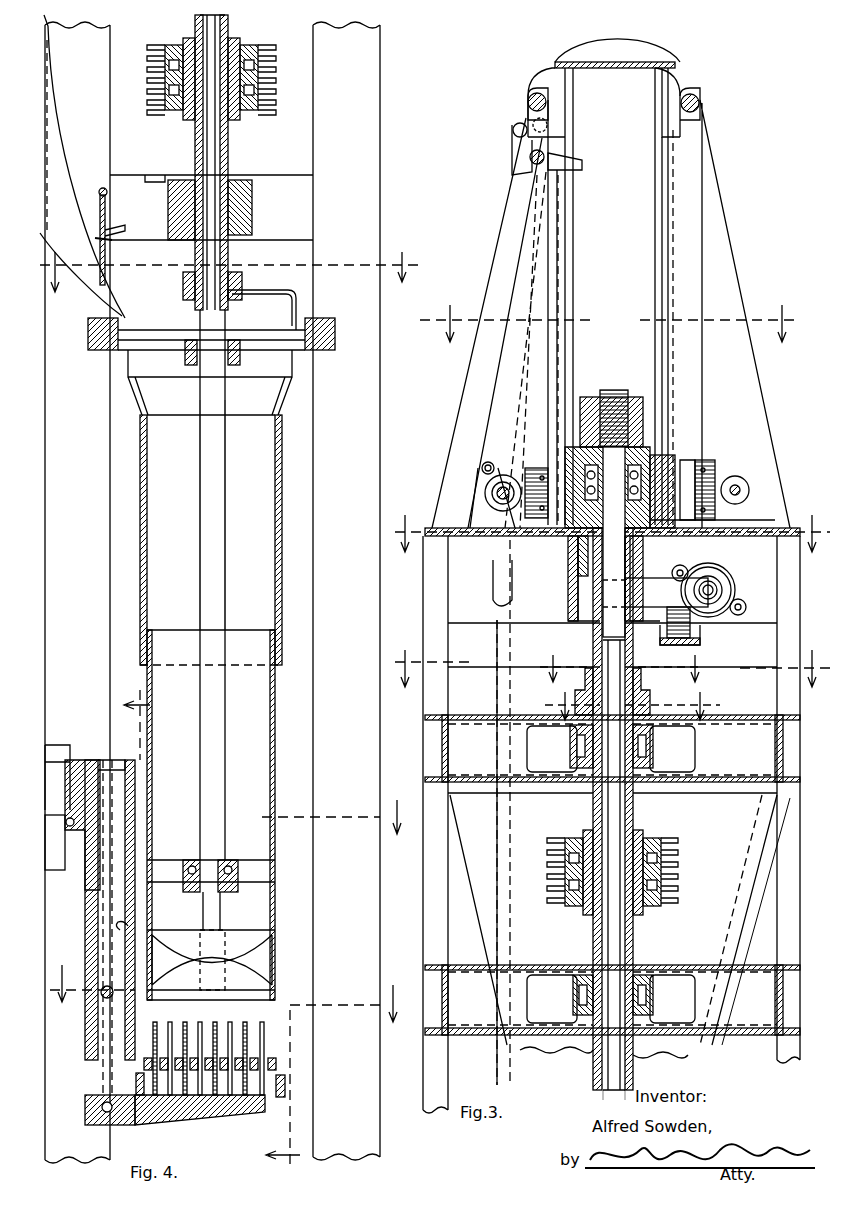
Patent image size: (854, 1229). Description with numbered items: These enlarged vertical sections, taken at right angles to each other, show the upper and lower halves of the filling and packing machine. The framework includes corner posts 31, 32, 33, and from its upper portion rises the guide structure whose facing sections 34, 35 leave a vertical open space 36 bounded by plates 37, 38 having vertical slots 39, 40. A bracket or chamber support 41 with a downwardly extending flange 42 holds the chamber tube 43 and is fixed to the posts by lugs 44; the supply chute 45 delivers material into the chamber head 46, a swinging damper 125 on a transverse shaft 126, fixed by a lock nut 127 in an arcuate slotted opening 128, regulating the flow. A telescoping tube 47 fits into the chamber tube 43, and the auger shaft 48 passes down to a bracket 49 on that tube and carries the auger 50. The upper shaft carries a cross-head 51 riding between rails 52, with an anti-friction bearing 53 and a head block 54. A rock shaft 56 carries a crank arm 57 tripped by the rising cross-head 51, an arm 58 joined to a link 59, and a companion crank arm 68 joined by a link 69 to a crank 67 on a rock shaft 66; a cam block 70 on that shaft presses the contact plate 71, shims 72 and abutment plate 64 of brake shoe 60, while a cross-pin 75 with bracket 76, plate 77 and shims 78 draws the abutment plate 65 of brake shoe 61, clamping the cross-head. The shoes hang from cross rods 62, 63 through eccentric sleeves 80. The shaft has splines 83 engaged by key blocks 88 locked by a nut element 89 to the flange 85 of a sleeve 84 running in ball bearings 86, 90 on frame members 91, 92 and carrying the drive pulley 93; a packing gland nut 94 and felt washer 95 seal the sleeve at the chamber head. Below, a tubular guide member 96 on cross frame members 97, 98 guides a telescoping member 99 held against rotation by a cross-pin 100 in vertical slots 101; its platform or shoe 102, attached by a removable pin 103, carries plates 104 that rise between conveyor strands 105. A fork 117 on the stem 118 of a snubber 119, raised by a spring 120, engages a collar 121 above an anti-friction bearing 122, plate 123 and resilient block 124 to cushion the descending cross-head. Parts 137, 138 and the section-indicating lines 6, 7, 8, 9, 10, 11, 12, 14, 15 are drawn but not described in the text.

In FIG. 4, the corner post 31 is at (355, 428).
In FIG. 4, the corner post 32 is at (212, 592).
In FIG. 3, the corner post 32 is at (801, 799).
In FIG. 3, the corner post 33 is at (428, 862).
In FIG. 3, the guide structure section 34 is at (472, 280).
In FIG. 3, the guide structure section 35 is at (730, 266).
In FIG. 3, the vertical open space 36 is at (630, 219).
In FIG. 3, the plate 37 is at (560, 265).
In FIG. 3, the plate 38 is at (672, 238).
In FIG. 3, the vertical slot 39 is at (565, 136).
In FIG. 3, the vertical slot 40 is at (672, 118).
In FIG. 4, the bracket or chamber support 41 is at (322, 355).
In FIG. 4, the downwardly extending flange 42 is at (300, 377).
In FIG. 4, the chamber tube 43 is at (280, 497).
In FIG. 4, the lugs 44 is at (335, 333).
In FIG. 4, the supply chute 45 is at (92, 153).
In FIG. 3, the supply chute 45 is at (715, 940).
In FIG. 4, the chamber head 46 is at (296, 292).
In FIG. 4, the telescoping tube 47 is at (275, 746).
In FIG. 4, the auger shaft 48 is at (213, 617).
In FIG. 3, the auger shaft 48 is at (607, 1092).
In FIG. 4, the bracket 49 is at (245, 868).
In FIG. 4, the auger 50 is at (270, 961).
In FIG. 3, the cross-head 51 is at (560, 472).
In FIG. 3, the vertical bars or rails 52 is at (660, 274).
In FIG. 3, the anti-friction bearing 53 is at (650, 478).
In FIG. 3, the head block 54 is at (650, 420).
In FIG. 3, the rock shaft 56 is at (530, 160).
In FIG. 3, the crank arm 57 is at (583, 164).
In FIG. 3, the arm 58 is at (552, 148).
In FIG. 3, the link 59 is at (498, 688).
In FIG. 3, the brake shoe 60 is at (549, 355).
In FIG. 3, the brake shoe 61 is at (680, 338).
In FIG. 3, the cross rod 62 is at (528, 103).
In FIG. 3, the cross rod 63 is at (700, 100).
In FIG. 3, the abutment plate 64 is at (500, 460).
In FIG. 3, the abutment plate 65 is at (700, 521).
In FIG. 3, the rock shaft 66 is at (497, 494).
In FIG. 3, the crank 67 is at (492, 488).
In FIG. 3, the companion crank arm 68 is at (514, 135).
In FIG. 3, the link 69 is at (490, 398).
In FIG. 3, the cam block 70 is at (485, 510).
In FIG. 3, the contact plate 71 is at (540, 564).
In FIG. 3, the shims 72 is at (527, 458).
In FIG. 3, the cross-pin 75 is at (740, 494).
In FIG. 3, the bracket 76 is at (742, 488).
In FIG. 3, the plate 77 is at (715, 470).
In FIG. 3, the shims 78 is at (683, 490).
In FIG. 3, the sleeve 80 is at (530, 96).
In FIG. 4, the splines 83 is at (218, 162).
In FIG. 3, the splines 83 is at (614, 820).
In FIG. 4, the sleeve 84 is at (232, 150).
In FIG. 3, the sleeve 84 is at (640, 942).
In FIG. 3, the flange 85 is at (577, 725).
In FIG. 3, the ball bearing 86 is at (655, 742).
In FIG. 3, the key blocks 88 is at (642, 683).
In FIG. 3, the nut element 89 is at (590, 686).
In FIG. 4, the anti-friction bearing 90 is at (252, 206).
In FIG. 3, the anti-friction bearing 90 is at (653, 993).
In FIG. 3, the frame member 91 is at (745, 772).
In FIG. 4, the frame member 92 is at (168, 212).
In FIG. 4, the drive pulley 93 is at (276, 80).
In FIG. 3, the drive pulley 93 is at (680, 868).
In FIG. 4, the packing gland nut 94 is at (240, 358).
In FIG. 4, the felt washer 95 is at (243, 282).
In FIG. 4, the vertical tubular guide member 96 is at (122, 930).
In FIG. 4, the cross frame member 97 is at (60, 745).
In FIG. 4, the cross frame member 98 is at (62, 888).
In FIG. 4, the telescoping member 99 is at (125, 935).
In FIG. 4, the cross-pin 100 is at (138, 1000).
In FIG. 4, the vertical slots 101 is at (86, 1035).
In FIG. 4, the platform or shoe 102 is at (155, 1120).
In FIG. 4, the removable pin 103 is at (102, 1107).
In FIG. 4, the upwardly extending plates 104 is at (207, 1027).
In FIG. 4, the conveyor strands 105 is at (255, 1070).
In FIG. 3, the fork 117 is at (596, 612).
In FIG. 3, the stem 118 is at (722, 590).
In FIG. 3, the shock-absorber or snubber 119 is at (714, 570).
In FIG. 3, the spring 120 is at (700, 633).
In FIG. 3, the collar 121 is at (660, 570).
In FIG. 3, the anti-friction bearing 122 is at (568, 576).
In FIG. 3, the plate 123 is at (653, 578).
In FIG. 3, the resilient block 124 is at (567, 556).
In FIG. 4, the swinging damper 125 is at (108, 283).
In FIG. 4, the transverse shaft 126 is at (100, 192).
In FIG. 4, the lock nut 127 is at (102, 232).
In FIG. 4, the arcuate slotted opening 128 is at (96, 239).
In FIG. 4, the block 137 is at (285, 1083).
In FIG. 4, the block 138 is at (136, 1080).
In FIG. 3, the section line 6- 6 is at (610, 323).
In FIG. 3, the section line 7- 7 is at (611, 524).
In FIG. 3, the section line 8- 8 is at (611, 658).
In FIG. 4, the section line 9- 9 is at (230, 279).
In FIG. 4, the section line 10- 10 is at (340, 816).
In FIG. 4, the section line 11- 11 is at (235, 983).
In FIG. 4, the section line 12- 12 is at (210, 930).
In FIG. 3, the section line 14- 14 is at (622, 664).
In FIG. 3, the section line 15- 15 is at (623, 703).